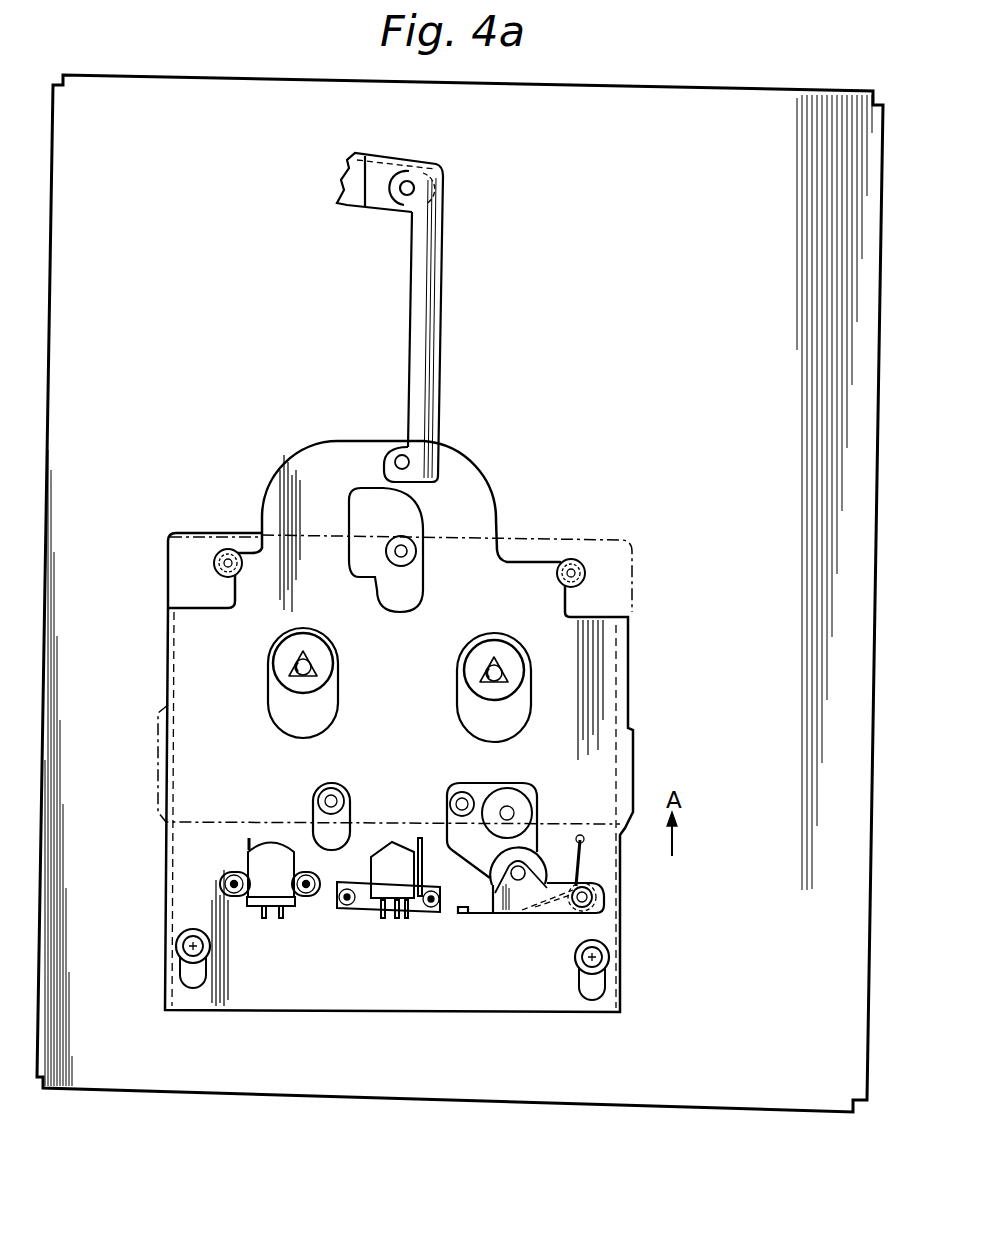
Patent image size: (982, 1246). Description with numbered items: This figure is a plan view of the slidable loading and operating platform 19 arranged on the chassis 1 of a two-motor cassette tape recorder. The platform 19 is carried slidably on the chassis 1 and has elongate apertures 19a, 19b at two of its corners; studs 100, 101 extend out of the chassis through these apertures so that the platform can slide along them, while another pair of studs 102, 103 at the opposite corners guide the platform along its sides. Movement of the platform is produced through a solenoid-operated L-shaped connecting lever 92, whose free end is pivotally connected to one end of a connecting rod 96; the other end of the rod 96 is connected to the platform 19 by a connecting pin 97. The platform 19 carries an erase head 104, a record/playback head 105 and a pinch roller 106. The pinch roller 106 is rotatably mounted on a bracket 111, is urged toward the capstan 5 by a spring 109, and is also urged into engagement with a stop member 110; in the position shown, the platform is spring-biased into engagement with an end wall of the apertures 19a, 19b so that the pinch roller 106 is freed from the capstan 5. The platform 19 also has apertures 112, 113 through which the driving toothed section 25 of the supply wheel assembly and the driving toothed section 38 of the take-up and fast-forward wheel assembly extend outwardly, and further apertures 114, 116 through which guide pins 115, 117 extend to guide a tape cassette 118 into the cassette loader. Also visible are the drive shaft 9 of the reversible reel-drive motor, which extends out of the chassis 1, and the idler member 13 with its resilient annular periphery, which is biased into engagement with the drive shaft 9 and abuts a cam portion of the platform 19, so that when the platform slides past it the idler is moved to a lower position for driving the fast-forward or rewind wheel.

The chassis 1 is at (597, 93).
The capstan 5 is at (509, 808).
The drive shaft 9 is at (417, 552).
The idler member 13 is at (416, 596).
The platform 19 is at (560, 1012).
The elongate aperture 19a is at (207, 970).
The elongate aperture 19b is at (603, 986).
The driving toothed section 25 is at (293, 668).
The driving toothed section 38 is at (502, 667).
The L shaped connecting lever 92 is at (349, 206).
The connecting rod 96 is at (436, 402).
The connecting pin 97 is at (397, 452).
The stud 100 is at (177, 946).
The stud 101 is at (607, 954).
The stud 102 is at (226, 578).
The stud 103 is at (585, 579).
The erase head 104 is at (248, 862).
The record/playback head 105 is at (400, 918).
The pinch roller 106 is at (492, 882).
The spring 109 is at (577, 906).
The stop member 110 is at (461, 915).
The bracket 111 is at (502, 918).
The aperture 112 is at (268, 714).
The aperture 113 is at (528, 712).
The aperture 114 is at (313, 807).
The guide pin 115 is at (321, 797).
The aperture 116 is at (444, 820).
The guide pin 117 is at (457, 796).
The tape cassette 118 is at (640, 578).